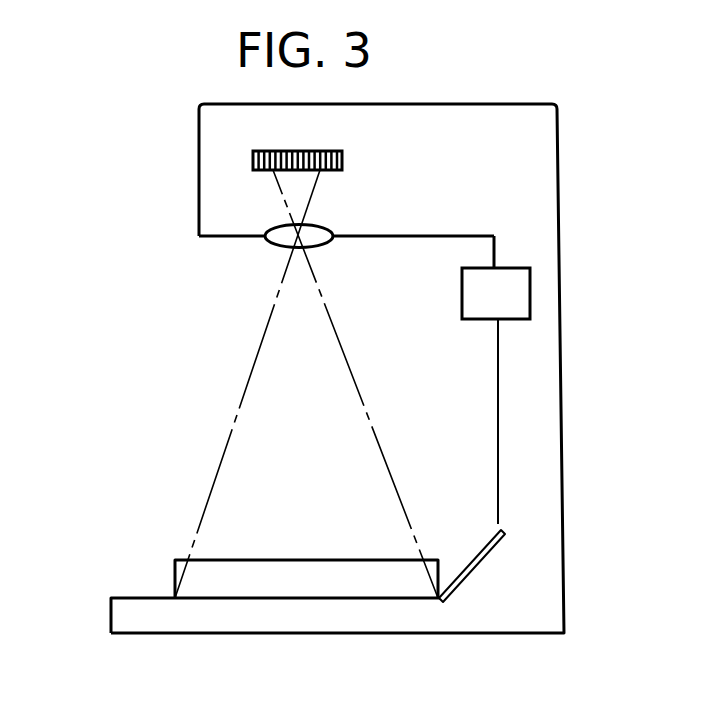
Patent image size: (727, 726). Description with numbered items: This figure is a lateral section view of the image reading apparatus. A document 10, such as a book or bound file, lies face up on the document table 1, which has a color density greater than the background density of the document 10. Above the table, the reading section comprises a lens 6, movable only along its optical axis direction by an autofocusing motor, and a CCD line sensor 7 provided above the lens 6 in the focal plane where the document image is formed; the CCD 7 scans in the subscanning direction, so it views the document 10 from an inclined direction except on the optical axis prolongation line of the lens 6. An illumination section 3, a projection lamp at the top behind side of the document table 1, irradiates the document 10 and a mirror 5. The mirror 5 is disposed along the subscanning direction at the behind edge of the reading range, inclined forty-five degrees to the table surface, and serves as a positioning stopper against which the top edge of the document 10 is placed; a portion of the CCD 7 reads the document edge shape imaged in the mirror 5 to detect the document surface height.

The document table 1 is at (143, 598).
The illumination section 3 is at (512, 268).
The mirror 5 is at (472, 557).
The lens 6 is at (271, 249).
The CCD line sensor 7 is at (334, 153).
The document 10 is at (297, 560).